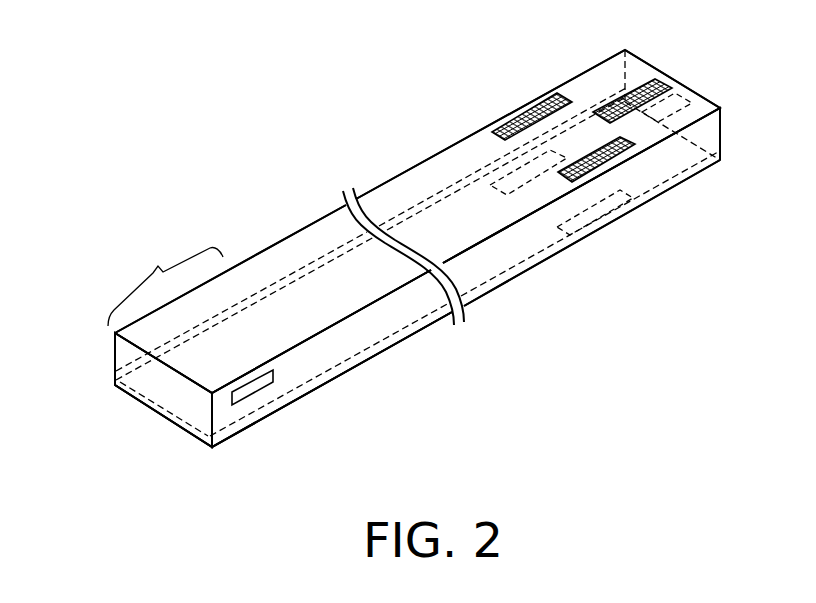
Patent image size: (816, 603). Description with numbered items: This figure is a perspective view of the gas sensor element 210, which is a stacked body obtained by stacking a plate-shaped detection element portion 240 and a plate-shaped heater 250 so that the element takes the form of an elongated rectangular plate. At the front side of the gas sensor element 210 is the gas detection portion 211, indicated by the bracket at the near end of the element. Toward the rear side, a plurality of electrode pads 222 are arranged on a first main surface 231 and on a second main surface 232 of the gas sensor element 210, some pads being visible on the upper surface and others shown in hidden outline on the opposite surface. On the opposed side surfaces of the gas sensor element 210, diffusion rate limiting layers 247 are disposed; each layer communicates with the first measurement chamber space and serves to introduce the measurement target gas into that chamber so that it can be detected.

The gas sensor element 210 is at (360, 128).
The gas detection portion 211 is at (165, 281).
The electrode pads 222 is at (530, 106).
The first main surface 231 is at (416, 188).
The second main surface 232 is at (497, 257).
The detection element portion 240 is at (113, 347).
The diffusion rate limiting layer 247 is at (238, 396).
The heater 250 is at (160, 412).